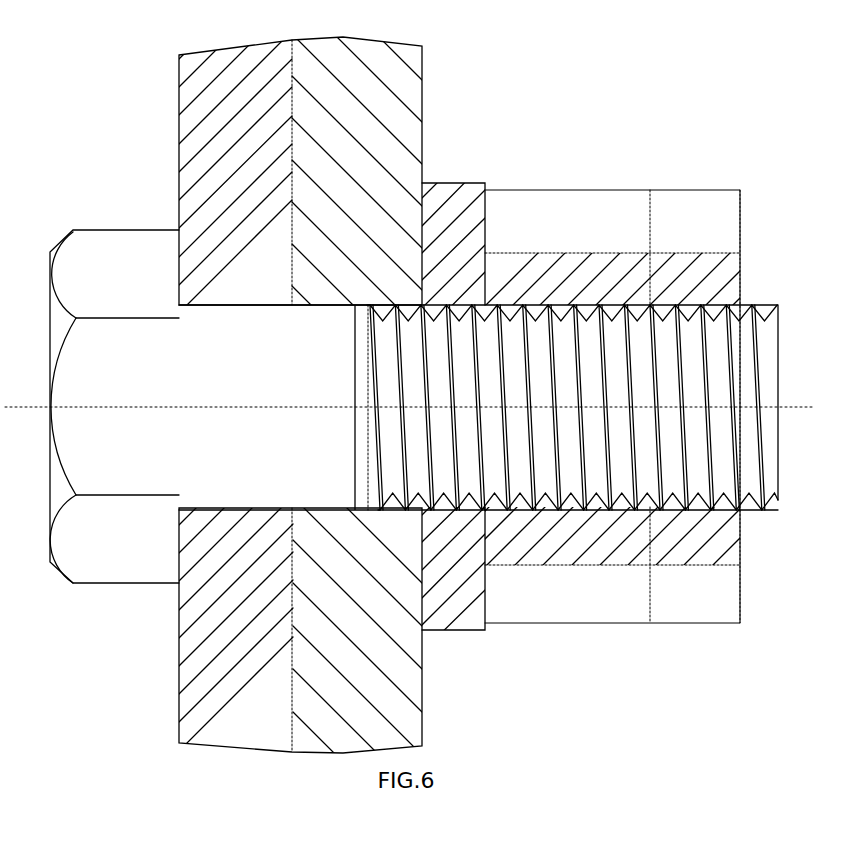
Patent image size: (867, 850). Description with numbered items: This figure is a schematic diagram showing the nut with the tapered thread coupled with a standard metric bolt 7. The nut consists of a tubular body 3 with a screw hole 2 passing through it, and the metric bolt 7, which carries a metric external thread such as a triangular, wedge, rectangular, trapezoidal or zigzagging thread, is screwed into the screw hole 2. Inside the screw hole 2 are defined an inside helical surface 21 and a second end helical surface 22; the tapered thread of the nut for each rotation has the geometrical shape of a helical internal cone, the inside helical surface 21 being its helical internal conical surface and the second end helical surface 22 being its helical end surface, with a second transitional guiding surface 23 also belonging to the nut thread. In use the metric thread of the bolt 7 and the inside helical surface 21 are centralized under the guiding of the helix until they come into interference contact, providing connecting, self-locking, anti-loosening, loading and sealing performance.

The metric bolt 7 is at (218, 370).
The tubular body 3 is at (445, 222).
The screw hole 2 is at (622, 508).
The inside helical surface 21 is at (577, 305).
The second end helical surface 22 is at (679, 305).
The second transitional guiding surface 23 is at (730, 305).